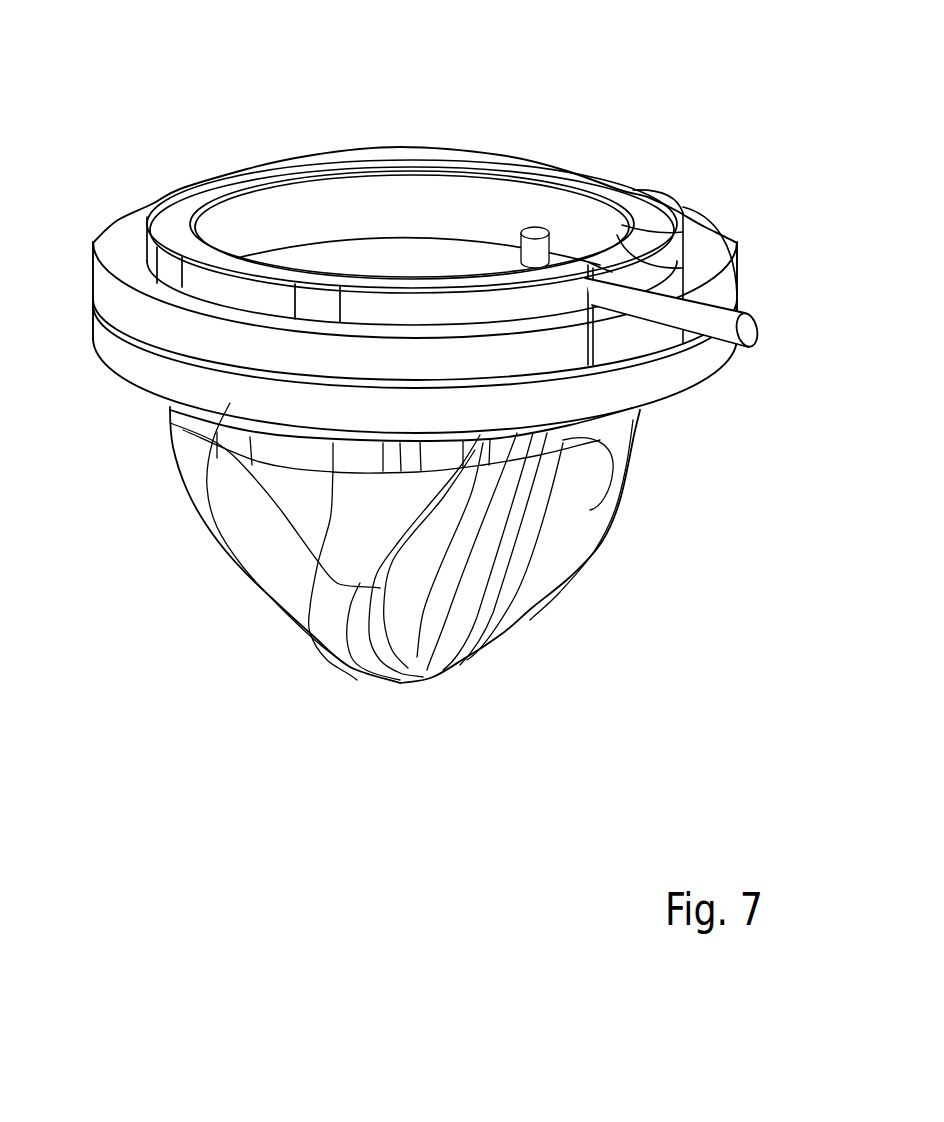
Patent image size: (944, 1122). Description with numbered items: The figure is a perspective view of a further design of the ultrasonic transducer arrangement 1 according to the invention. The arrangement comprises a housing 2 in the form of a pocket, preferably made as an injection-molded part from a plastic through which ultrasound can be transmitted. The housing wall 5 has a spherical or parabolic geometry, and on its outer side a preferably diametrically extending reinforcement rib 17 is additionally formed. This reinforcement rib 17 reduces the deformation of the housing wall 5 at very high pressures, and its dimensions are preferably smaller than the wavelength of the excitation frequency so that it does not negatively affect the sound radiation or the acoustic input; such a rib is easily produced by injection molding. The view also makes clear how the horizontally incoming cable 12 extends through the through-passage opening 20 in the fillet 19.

The ultrasonic transducer arrangement 1 is at (406, 30).
The housing 2 is at (250, 535).
The housing wall 5 is at (567, 510).
The cable 12 is at (708, 318).
The reinforcement rib 17 is at (483, 562).
The fillet 19 is at (176, 210).
The through-passage opening 20 is at (600, 268).